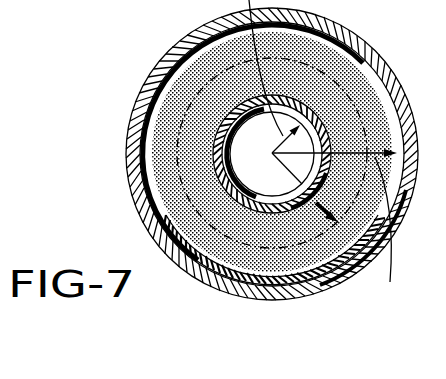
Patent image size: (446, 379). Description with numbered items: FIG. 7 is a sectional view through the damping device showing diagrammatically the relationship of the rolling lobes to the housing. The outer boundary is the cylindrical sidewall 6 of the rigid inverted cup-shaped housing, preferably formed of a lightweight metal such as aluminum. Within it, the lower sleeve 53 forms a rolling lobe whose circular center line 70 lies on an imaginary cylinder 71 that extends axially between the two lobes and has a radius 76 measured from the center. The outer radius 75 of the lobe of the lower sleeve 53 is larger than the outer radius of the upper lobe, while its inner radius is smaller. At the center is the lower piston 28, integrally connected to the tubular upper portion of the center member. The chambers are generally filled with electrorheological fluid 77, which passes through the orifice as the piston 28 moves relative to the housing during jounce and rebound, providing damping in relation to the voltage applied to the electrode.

The cylindrical sidewall 6 is at (160, 68).
The circular center line of lobe 54 70 is at (357, 50).
The electrorheological fluid 77 is at (210, 65).
The lower piston 28 is at (150, 112).
The lower sleeve 53 is at (142, 179).
The imaginary cylinder 71 is at (138, 215).
The outer radius of lobe 54 75 is at (389, 230).
The radius of imaginary cylinder 76 is at (314, 214).